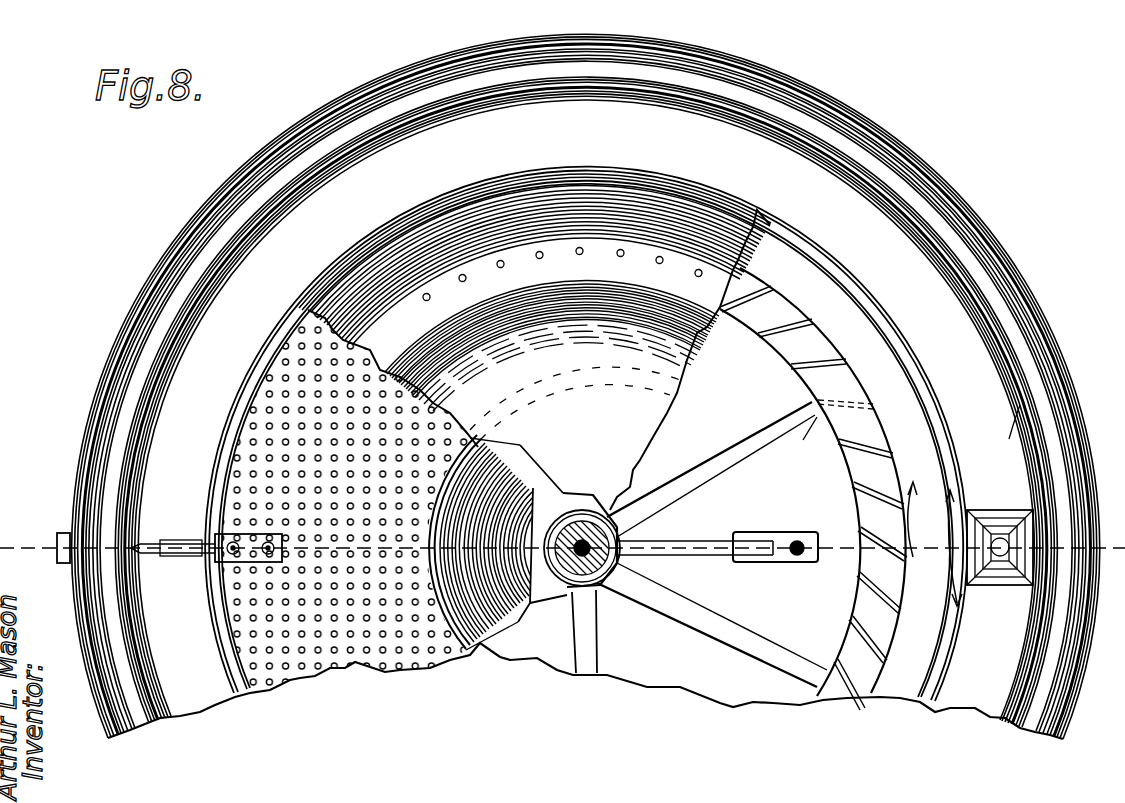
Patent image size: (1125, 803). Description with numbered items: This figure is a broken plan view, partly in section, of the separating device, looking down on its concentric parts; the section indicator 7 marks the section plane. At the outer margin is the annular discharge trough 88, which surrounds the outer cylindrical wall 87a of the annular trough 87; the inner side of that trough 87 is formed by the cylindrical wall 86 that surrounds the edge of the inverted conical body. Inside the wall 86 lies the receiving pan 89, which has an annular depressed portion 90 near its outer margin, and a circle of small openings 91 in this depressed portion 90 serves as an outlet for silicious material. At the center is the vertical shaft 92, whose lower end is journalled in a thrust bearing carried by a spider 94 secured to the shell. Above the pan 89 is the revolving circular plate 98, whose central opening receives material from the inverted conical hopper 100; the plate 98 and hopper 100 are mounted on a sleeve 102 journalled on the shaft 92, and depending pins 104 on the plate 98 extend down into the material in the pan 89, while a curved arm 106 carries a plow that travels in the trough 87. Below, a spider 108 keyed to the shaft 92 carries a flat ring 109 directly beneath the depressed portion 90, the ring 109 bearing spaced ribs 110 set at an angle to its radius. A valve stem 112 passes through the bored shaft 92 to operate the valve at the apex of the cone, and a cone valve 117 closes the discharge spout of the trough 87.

The section line 7 is at (935, 544).
The cylindrical wall 86 is at (913, 353).
The annular trough 87 is at (977, 390).
The outer cylindrical wall 87a is at (1027, 438).
The annular discharge trough 88 is at (1020, 318).
The receiving pan 89 is at (535, 307).
The depressed portion 90 is at (659, 267).
The small openings 91 is at (547, 255).
The vertical shaft 92 is at (600, 512).
The spider 94 is at (748, 560).
The revolving circular plate 98 is at (468, 542).
The inverted conical hopper 100 is at (436, 513).
The sleeve 102 is at (563, 525).
The depending pins 104 is at (397, 627).
The curved arm 106 is at (182, 540).
The spider 108 is at (680, 597).
The flat ring 109 is at (897, 415).
The spaced ribs 110 is at (840, 445).
The valve stem 112 is at (570, 578).
The cone valve 117 is at (1000, 530).